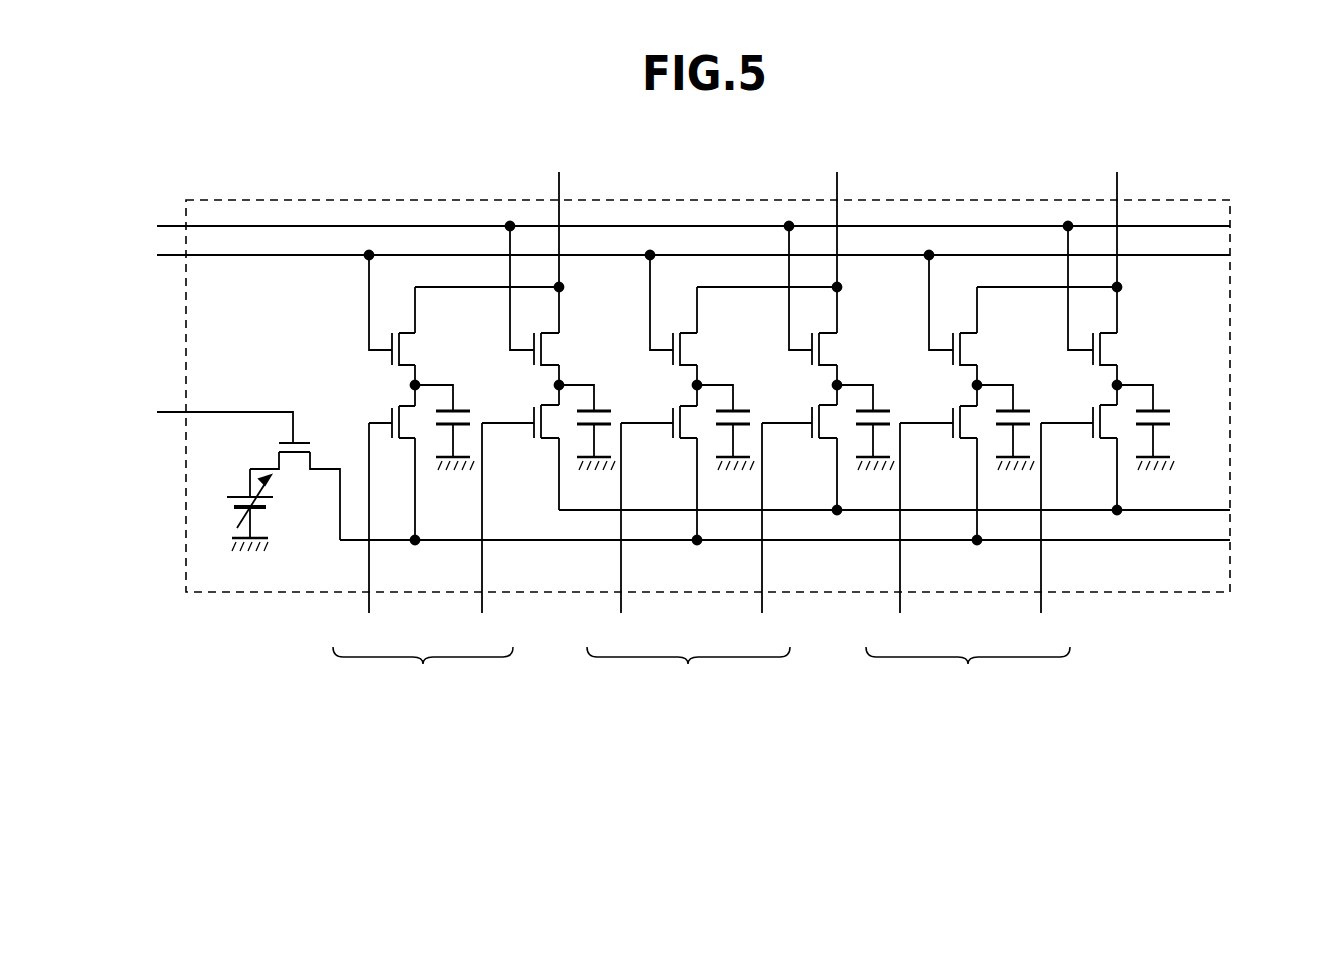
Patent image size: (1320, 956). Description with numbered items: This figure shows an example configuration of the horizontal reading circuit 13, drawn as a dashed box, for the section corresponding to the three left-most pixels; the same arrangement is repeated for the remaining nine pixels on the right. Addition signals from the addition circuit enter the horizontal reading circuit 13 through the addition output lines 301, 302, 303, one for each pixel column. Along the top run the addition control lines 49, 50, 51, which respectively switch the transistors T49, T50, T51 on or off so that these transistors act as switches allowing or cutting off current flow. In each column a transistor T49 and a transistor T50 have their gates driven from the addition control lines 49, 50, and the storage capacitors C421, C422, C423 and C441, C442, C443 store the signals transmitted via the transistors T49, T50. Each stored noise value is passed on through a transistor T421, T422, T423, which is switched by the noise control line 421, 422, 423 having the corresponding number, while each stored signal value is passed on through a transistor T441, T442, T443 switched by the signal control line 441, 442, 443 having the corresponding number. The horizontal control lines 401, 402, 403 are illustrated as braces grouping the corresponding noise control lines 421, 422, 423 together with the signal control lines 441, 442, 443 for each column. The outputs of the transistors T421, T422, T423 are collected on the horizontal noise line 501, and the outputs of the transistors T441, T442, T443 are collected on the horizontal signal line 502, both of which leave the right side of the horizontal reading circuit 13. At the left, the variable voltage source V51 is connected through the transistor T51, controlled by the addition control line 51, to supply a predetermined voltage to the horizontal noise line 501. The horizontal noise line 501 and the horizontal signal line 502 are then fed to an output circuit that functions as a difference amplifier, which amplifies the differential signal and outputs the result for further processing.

The horizontal reading circuit 13 is at (186, 537).
The addition control line 49 is at (675, 256).
The addition control line 50 is at (675, 228).
The addition control line 51 is at (207, 421).
The variable voltage source V51 is at (236, 494).
The transistor T51 is at (295, 458).
The transistor T49 is at (403, 340).
The transistor T50 is at (545, 340).
The transistor T421 is at (392, 410).
The transistor T422 is at (672, 436).
The transistor T423 is at (952, 436).
The transistor T441 is at (532, 436).
The transistor T442 is at (812, 436).
The transistor T443 is at (1092, 436).
The storage capacitor C421 is at (488, 387).
The storage capacitor C422 is at (768, 387).
The storage capacitor C423 is at (1048, 387).
The storage capacitor C441 is at (629, 387).
The storage capacitor C442 is at (908, 387).
The storage capacitor C443 is at (1188, 387).
The noise control line 421 is at (369, 535).
The noise control line 422 is at (621, 535).
The noise control line 423 is at (900, 535).
The signal control line 441 is at (482, 535).
The signal control line 442 is at (762, 535).
The signal control line 443 is at (1042, 535).
The addition output line 301 is at (561, 238).
The addition output line 302 is at (841, 238).
The addition output line 303 is at (1121, 238).
The horizontal control line 401 is at (423, 672).
The horizontal control line 402 is at (688, 672).
The horizontal control line 403 is at (968, 672).
The horizontal noise line 501 is at (811, 540).
The horizontal signal line 502 is at (921, 511).